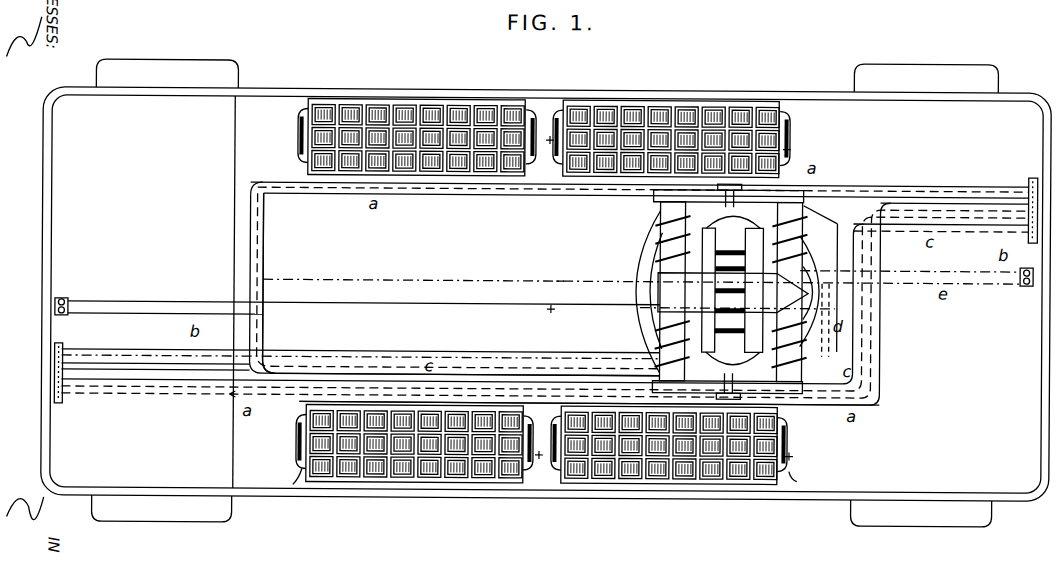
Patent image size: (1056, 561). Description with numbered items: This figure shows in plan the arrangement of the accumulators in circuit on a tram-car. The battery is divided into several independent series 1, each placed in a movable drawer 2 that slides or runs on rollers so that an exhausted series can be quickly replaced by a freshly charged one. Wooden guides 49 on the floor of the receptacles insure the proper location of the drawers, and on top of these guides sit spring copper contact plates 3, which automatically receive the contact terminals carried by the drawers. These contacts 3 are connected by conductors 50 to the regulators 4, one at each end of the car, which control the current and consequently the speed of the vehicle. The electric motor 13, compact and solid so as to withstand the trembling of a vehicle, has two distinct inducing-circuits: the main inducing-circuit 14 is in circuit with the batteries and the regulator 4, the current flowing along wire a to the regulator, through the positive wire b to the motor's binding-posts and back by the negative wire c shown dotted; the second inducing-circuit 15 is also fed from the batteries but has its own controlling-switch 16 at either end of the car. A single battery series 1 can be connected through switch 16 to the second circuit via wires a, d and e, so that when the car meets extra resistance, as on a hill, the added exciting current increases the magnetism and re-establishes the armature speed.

The battery series 1 is at (513, 108).
The movable drawer 2 is at (402, 106).
The automatically-acting contact 3 is at (298, 134).
The regulator 4 is at (59, 406).
The electric motor 13 is at (732, 292).
The inducing-circuit 14 is at (793, 254).
The second inducing-circuit 15 is at (803, 203).
The controlling-switch 16 is at (64, 301).
The wooden guide 49 is at (304, 486).
The conductor 50 is at (250, 190).